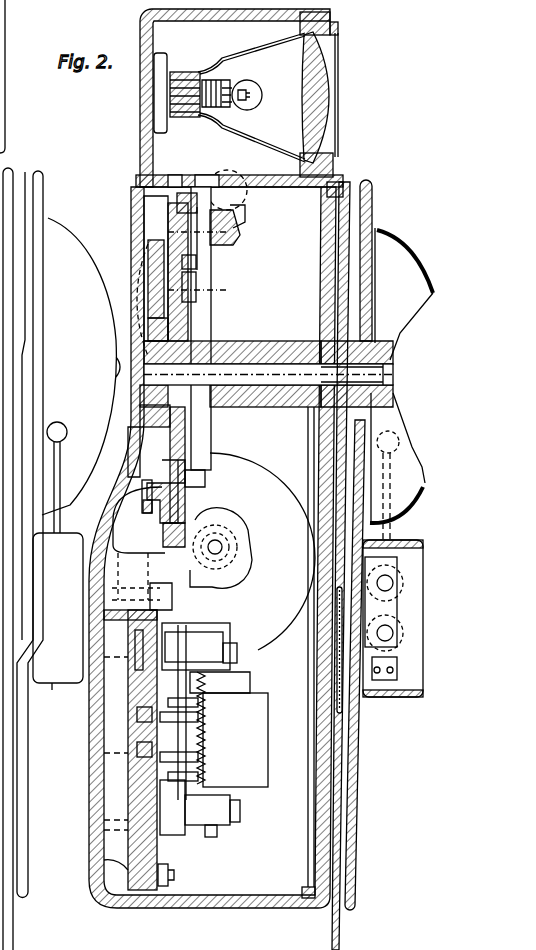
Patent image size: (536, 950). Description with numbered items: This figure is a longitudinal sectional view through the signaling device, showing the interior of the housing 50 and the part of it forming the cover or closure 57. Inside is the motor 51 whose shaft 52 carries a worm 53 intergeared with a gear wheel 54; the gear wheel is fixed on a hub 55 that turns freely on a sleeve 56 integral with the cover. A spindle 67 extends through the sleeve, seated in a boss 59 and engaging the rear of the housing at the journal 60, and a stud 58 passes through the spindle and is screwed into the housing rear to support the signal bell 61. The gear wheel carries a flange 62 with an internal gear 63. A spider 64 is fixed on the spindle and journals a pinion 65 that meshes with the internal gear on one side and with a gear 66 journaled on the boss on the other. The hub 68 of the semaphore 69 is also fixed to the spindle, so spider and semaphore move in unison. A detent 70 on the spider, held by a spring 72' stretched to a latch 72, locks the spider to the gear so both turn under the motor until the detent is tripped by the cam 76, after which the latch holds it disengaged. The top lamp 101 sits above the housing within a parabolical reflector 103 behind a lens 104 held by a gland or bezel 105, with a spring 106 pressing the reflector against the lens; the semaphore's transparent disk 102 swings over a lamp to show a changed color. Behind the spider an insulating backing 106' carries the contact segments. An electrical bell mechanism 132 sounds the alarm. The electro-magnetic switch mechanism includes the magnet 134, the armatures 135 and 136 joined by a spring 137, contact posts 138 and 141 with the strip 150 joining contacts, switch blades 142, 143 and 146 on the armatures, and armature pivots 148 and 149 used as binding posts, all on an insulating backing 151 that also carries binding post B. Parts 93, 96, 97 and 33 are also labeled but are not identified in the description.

The housing 50 is at (155, 908).
The motor 51 is at (278, 475).
The shaft 52 is at (250, 538).
The worm 53 is at (240, 542).
The gear wheel 54 is at (232, 246).
The hub 55 is at (258, 343).
The sleeve 56 is at (300, 400).
The cover or closure 57 is at (352, 186).
The stud 58 is at (104, 376).
The boss 59 is at (137, 302).
The journal seat in rear of housing 60 is at (183, 371).
The signal bell 61 is at (408, 247).
The flange 62 is at (207, 183).
The internal gear 63 is at (178, 183).
The spider 64 is at (213, 312).
The pinion 65 is at (163, 524).
The gear 66 is at (170, 446).
The spindle 67 is at (290, 358).
The hub of semaphore 68 is at (366, 335).
The semaphore 69 is at (345, 783).
The detent 70 is at (225, 284).
The latch 72 is at (225, 219).
The spring 72' is at (220, 250).
The cam 76 is at (148, 292).
The link 93 is at (140, 503).
The sleeve 96 is at (170, 236).
The plate 97 is at (146, 200).
The third lamp 101 is at (253, 80).
The transparent disk 102 is at (342, 704).
The parabolical reflector 103 is at (219, 64).
The disk or lens 104 is at (335, 79).
The gland or bezel 105 is at (337, 160).
The spring 106 is at (198, 77).
The insulating backing 106' is at (131, 271).
The electrical bell mechanism 132 is at (52, 690).
The magnet 134 is at (268, 741).
The armature 135 is at (190, 640).
The armature 136 is at (175, 818).
The spring 137 is at (212, 740).
The contact post 138 is at (200, 718).
The contact post 141 is at (205, 758).
The switch blade 142 is at (212, 703).
The switch blade 143 is at (200, 776).
The switch blade 146 is at (205, 836).
The pivot 148 is at (238, 653).
The pivot 149 is at (238, 809).
The strip 150 is at (157, 727).
The insulating backing 151 is at (128, 862).
The link 33 is at (140, 480).
The binding post B is at (174, 877).